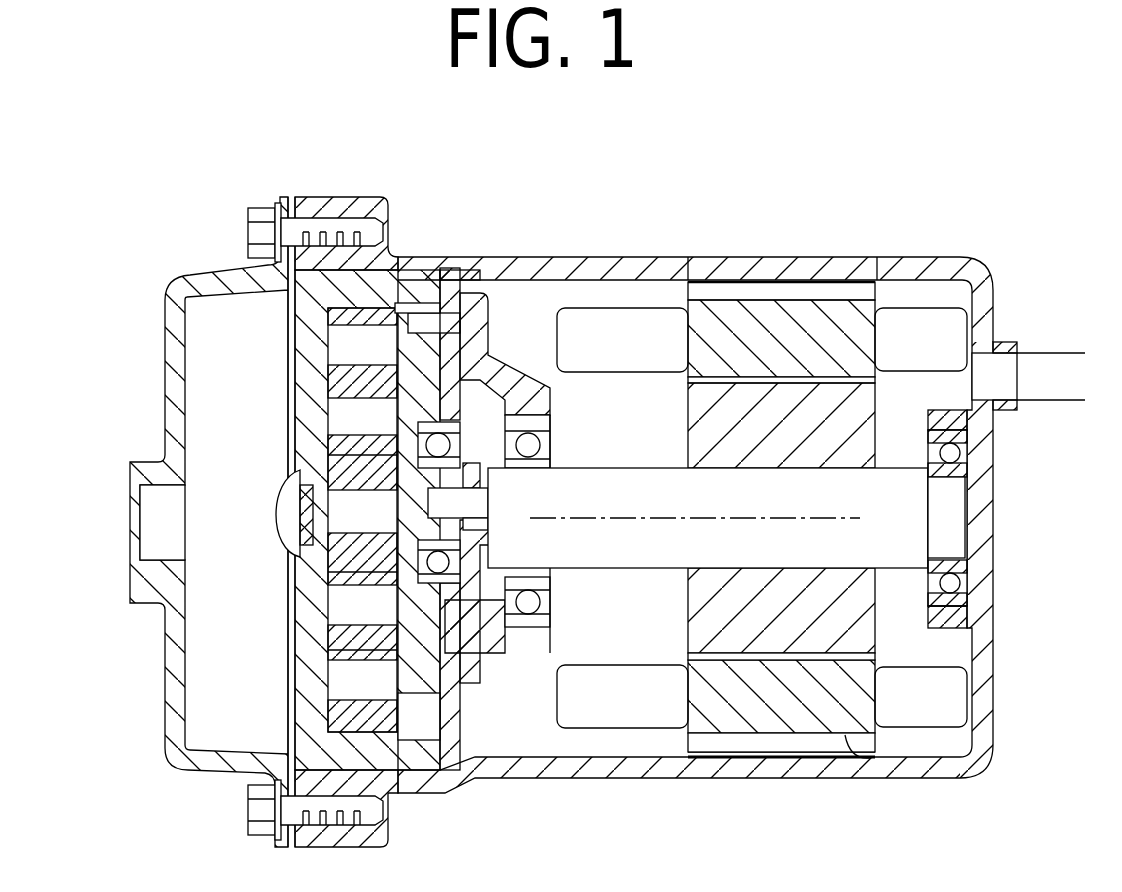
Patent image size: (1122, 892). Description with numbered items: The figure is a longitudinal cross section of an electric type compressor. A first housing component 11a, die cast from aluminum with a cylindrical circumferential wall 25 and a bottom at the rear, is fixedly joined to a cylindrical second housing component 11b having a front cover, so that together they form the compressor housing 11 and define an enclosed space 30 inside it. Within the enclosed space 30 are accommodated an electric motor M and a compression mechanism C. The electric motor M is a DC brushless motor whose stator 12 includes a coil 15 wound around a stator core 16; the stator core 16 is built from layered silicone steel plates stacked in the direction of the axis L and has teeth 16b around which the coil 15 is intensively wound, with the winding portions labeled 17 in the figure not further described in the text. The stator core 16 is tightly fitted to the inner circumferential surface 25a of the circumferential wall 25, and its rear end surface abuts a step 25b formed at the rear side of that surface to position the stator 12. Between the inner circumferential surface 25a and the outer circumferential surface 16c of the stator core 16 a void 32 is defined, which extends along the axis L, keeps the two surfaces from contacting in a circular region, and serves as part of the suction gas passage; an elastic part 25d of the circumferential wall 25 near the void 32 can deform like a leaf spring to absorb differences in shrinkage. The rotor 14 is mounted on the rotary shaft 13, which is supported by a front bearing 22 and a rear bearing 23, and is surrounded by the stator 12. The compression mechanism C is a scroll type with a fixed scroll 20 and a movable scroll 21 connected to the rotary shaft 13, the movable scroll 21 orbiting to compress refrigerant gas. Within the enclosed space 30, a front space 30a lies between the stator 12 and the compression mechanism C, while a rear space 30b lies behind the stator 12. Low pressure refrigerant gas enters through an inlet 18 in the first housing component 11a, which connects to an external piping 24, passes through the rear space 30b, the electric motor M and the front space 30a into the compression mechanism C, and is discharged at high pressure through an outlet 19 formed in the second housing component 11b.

The compressor housing 11 is at (580, 486).
The first housing component 11a is at (690, 507).
The second housing component 11b is at (182, 522).
The stator 12 is at (727, 515).
The rotary shaft 13 is at (708, 546).
The rotor 14 is at (690, 426).
The coil 15 is at (560, 347).
The stator core 16 is at (868, 336).
The teeth 16b is at (855, 352).
The outer circumferential surface of the stator core 16c is at (873, 752).
The coil end 17 is at (686, 298).
The inlet 18 is at (1007, 393).
The outlet 19 is at (145, 548).
The fixed scroll 20 is at (417, 764).
The movable scroll 21 is at (446, 682).
The front bearing 22 is at (536, 601).
The rear bearing 23 is at (951, 584).
The external piping 24 is at (1053, 350).
The circumferential wall 25 is at (695, 521).
The inner circumferential surface 25a is at (765, 752).
The step 25b is at (877, 260).
The elastic part 25d is at (782, 185).
The enclosed space 30 is at (530, 322).
The front space 30a is at (558, 746).
The rear space 30b is at (933, 748).
The void 32 is at (737, 290).
The compression mechanism C is at (441, 554).
The electric motor M is at (696, 802).
The axis L is at (708, 522).